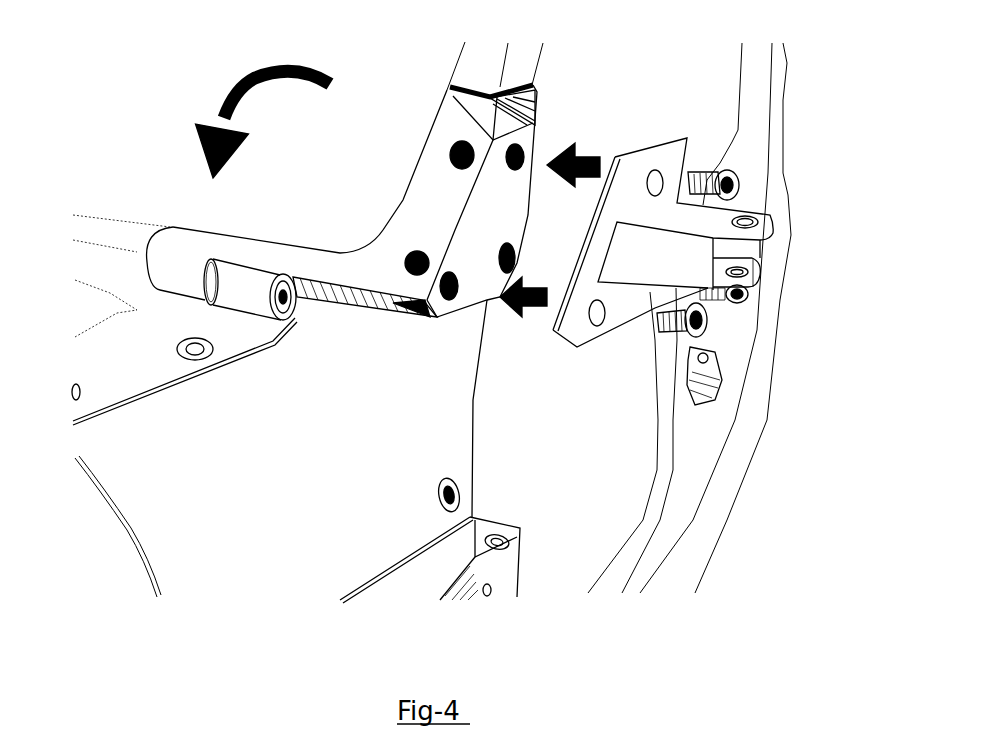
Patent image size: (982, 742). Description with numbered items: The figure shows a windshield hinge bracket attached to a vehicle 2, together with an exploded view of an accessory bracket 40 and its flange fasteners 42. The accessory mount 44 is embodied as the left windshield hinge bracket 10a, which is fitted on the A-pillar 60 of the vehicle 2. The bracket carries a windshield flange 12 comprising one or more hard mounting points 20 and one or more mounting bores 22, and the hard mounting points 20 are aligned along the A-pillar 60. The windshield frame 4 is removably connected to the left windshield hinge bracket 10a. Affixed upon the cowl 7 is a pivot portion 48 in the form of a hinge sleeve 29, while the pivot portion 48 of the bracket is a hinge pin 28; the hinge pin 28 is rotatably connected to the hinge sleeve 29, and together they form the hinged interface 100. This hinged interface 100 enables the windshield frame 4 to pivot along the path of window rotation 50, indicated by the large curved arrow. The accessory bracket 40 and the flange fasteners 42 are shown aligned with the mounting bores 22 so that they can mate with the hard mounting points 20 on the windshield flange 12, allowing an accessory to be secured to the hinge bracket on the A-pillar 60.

The vehicle 2 is at (793, 372).
The windshield frame 4 is at (463, 279).
The cowl 7 is at (123, 371).
The left windshield hinge bracket 10a is at (365, 358).
The windshield flange 12 is at (448, 279).
The hard mounting points 20 is at (450, 208).
The mounting bores 22 is at (412, 252).
The hinge pin 28 is at (180, 277).
The hinge sleeve 29 is at (238, 300).
The accessory bracket 40 is at (693, 261).
The flange fasteners 42 is at (724, 180).
The accessory mount 44 is at (399, 352).
The pivot portion 48 is at (228, 299).
The path of window rotation 50 is at (252, 95).
The A-pillar 60 is at (424, 492).
The hinged interface 100 is at (185, 322).